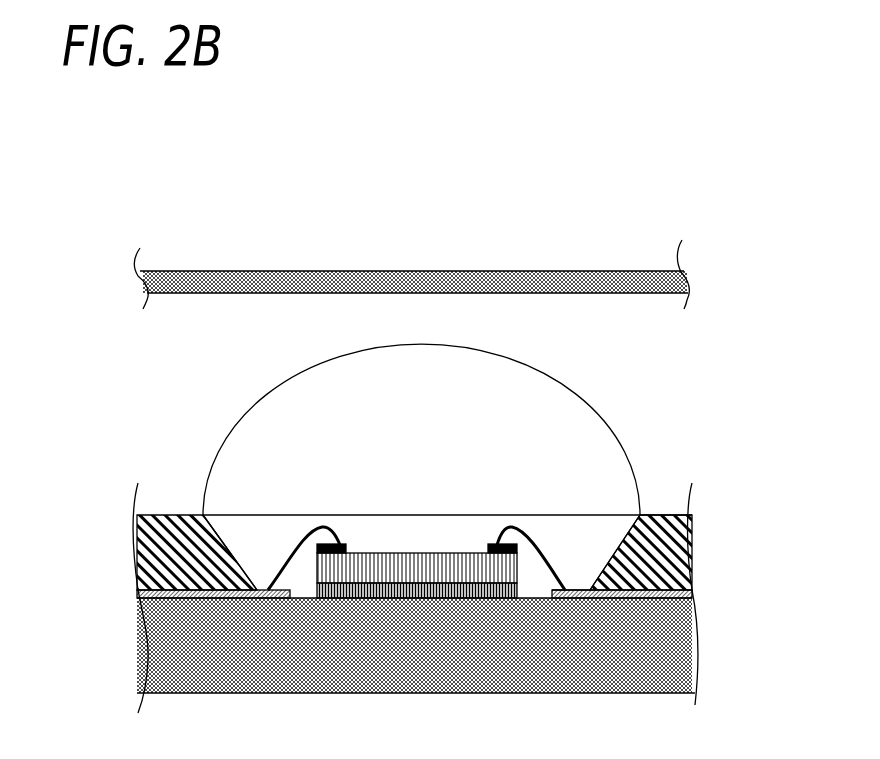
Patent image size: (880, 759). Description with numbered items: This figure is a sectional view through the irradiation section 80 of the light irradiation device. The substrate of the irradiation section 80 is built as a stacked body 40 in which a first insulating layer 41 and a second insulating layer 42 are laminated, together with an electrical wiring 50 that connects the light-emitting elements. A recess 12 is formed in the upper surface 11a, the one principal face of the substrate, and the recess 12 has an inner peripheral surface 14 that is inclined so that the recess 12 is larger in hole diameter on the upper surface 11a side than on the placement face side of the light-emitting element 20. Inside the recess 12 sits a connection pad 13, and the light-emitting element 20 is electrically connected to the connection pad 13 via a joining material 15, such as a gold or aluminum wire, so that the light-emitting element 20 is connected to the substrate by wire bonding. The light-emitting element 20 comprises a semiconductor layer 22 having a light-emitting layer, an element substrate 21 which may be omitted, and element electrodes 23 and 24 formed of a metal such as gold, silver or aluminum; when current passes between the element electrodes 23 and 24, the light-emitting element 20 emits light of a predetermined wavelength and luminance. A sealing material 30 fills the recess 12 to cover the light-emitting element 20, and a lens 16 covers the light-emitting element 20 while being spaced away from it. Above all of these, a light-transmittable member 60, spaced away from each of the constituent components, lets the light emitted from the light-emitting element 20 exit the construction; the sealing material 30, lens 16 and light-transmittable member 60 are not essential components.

The light-transmittable member 60 is at (312, 287).
The irradiation section 80 is at (769, 216).
The lens 16 is at (310, 370).
The joining material 15 is at (320, 540).
The light-emitting element 20 is at (425, 483).
The semiconductor layer 22 is at (382, 565).
The element substrate 21 is at (398, 590).
The element electrode 24 is at (340, 546).
The element electrode 23 is at (513, 542).
The sealing material 30 is at (452, 540).
The recess 12 is at (492, 527).
The connection pad 13 is at (572, 587).
The inner peripheral surface 14 is at (213, 527).
The upper surface 11a is at (687, 512).
The stacked body 40 is at (68, 512).
The first insulating layer 41 is at (178, 643).
The second insulating layer 42 is at (133, 550).
The electrical wiring 50 is at (687, 592).